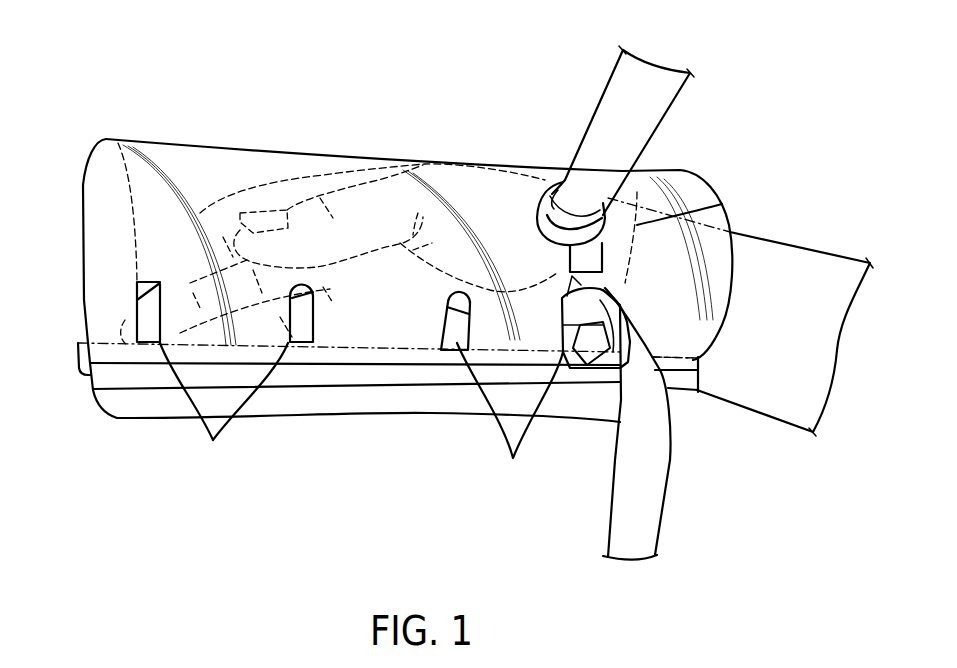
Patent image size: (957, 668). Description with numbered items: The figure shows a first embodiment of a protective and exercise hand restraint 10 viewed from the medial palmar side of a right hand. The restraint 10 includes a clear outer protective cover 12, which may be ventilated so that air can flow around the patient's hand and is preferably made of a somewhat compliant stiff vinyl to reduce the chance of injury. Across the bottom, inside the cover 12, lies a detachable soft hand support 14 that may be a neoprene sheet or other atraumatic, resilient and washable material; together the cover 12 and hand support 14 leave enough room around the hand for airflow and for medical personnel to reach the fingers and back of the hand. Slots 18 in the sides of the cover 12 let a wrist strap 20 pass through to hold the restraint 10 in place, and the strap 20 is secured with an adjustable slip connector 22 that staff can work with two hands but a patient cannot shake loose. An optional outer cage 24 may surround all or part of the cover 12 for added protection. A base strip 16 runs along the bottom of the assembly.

The protective and exercise hand restraint 10 is at (106, 43).
The clear outer protective cover 12 is at (212, 158).
The detachable soft hand support 14 is at (172, 407).
The base rail 16 is at (420, 377).
The slots 18 is at (592, 258).
The wrist strap 20 is at (720, 204).
The adjustable slip connector 22 is at (547, 183).
The outer cage 24 is at (723, 210).